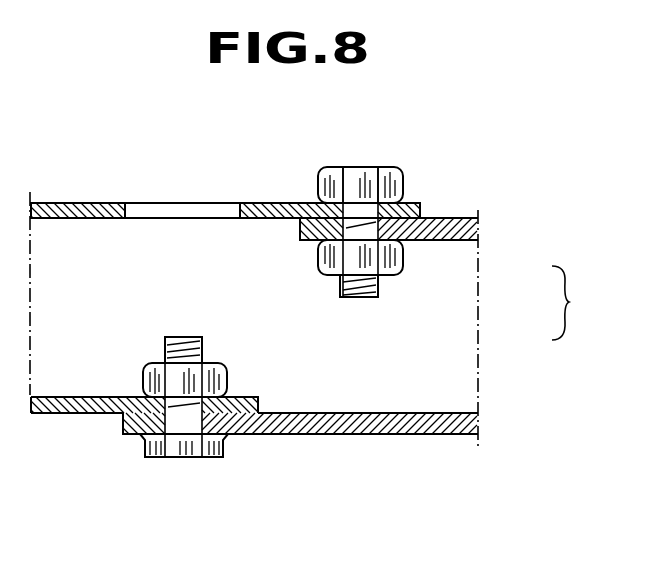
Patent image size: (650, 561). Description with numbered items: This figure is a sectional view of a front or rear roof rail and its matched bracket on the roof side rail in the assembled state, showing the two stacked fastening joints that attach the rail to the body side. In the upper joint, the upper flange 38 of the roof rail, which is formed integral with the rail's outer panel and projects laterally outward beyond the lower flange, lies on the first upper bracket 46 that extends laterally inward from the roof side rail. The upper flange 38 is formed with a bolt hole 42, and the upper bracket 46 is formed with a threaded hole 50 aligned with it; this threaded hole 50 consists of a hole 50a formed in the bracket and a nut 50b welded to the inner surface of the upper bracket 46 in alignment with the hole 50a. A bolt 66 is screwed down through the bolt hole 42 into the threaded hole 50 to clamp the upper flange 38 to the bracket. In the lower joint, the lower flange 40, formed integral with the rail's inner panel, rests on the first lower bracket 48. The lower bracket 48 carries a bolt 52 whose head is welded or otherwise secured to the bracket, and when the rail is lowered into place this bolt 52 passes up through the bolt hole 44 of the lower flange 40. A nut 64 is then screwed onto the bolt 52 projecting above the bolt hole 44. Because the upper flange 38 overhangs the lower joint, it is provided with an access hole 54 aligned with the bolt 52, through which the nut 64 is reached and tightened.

The upper flange 38 is at (68, 203).
The access hole 54 is at (184, 203).
The bolt hole 42 is at (400, 205).
The first upper bracket 46 is at (455, 218).
The bolt 66 is at (372, 167).
The threaded hole 50 is at (578, 303).
The hole 50a is at (403, 242).
The nut 50b is at (403, 268).
The lower flange 40 is at (78, 413).
The bolt hole 44 is at (228, 398).
The first lower bracket 48 is at (357, 434).
The nut 64 is at (212, 365).
The bolt 52 is at (184, 440).